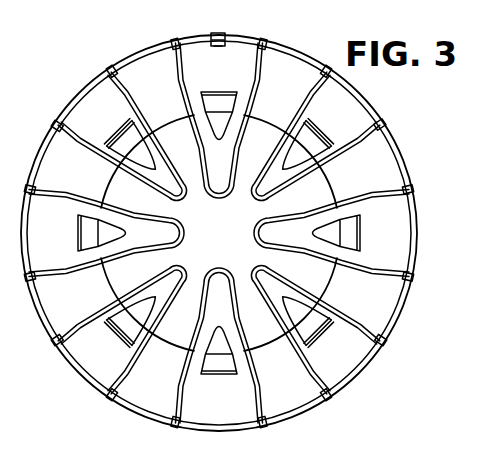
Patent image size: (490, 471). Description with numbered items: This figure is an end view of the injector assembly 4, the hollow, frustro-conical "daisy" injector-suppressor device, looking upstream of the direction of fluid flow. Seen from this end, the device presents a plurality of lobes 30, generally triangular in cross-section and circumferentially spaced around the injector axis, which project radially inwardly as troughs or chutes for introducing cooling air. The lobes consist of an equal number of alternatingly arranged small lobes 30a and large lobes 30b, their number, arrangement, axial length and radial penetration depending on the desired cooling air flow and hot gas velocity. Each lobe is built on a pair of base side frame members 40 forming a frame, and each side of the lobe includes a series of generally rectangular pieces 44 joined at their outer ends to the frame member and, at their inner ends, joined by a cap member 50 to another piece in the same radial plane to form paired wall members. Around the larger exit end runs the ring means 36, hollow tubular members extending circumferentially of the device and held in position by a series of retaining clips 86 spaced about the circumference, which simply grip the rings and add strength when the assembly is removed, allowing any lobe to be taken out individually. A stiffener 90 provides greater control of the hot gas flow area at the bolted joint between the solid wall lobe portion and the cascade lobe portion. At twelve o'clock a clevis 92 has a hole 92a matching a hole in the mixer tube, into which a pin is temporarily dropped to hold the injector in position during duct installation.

The lobes 30 is at (281, 63).
The small lobes 30a is at (266, 191).
The large lobes 30b is at (265, 234).
The ring means 36 is at (431, 200).
The base side frame members 40 is at (378, 138).
The rectangular pieces 44 is at (333, 172).
The cap member 50 is at (177, 199).
The retaining clips 86 is at (386, 125).
The stiffener 90 is at (72, 233).
The clevis 92 is at (220, 33).
The hole 92a is at (217, 47).
The injector assembly 4 is at (190, 263).